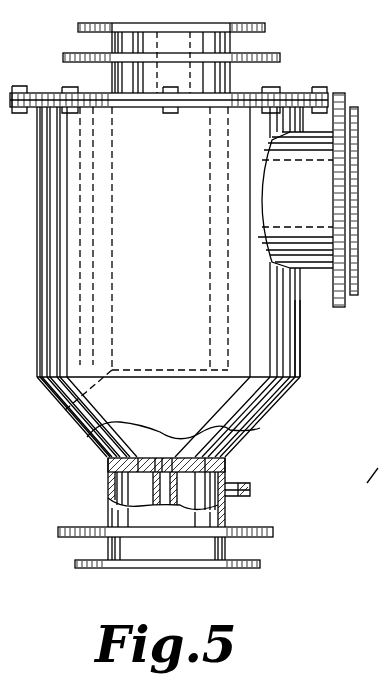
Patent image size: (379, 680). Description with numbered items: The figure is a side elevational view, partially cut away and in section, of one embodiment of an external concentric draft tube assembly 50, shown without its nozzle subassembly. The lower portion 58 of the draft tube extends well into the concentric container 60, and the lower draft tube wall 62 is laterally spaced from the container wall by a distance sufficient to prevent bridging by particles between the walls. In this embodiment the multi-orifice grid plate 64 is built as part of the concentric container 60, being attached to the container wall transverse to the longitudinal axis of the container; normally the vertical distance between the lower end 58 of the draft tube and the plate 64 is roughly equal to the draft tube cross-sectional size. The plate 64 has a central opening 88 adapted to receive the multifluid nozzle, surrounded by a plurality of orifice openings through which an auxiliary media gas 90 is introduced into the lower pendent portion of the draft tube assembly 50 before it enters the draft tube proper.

The external concentric draft tube assembly 50 is at (308, 320).
The lower portion of the draft tube 58 is at (68, 402).
The concentric container 60 is at (301, 367).
The lower draft tube wall 62 is at (226, 290).
The multi-orifice grid plate 64 is at (226, 466).
The central opening 88 is at (162, 458).
The auxiliary media gas 90 is at (254, 489).